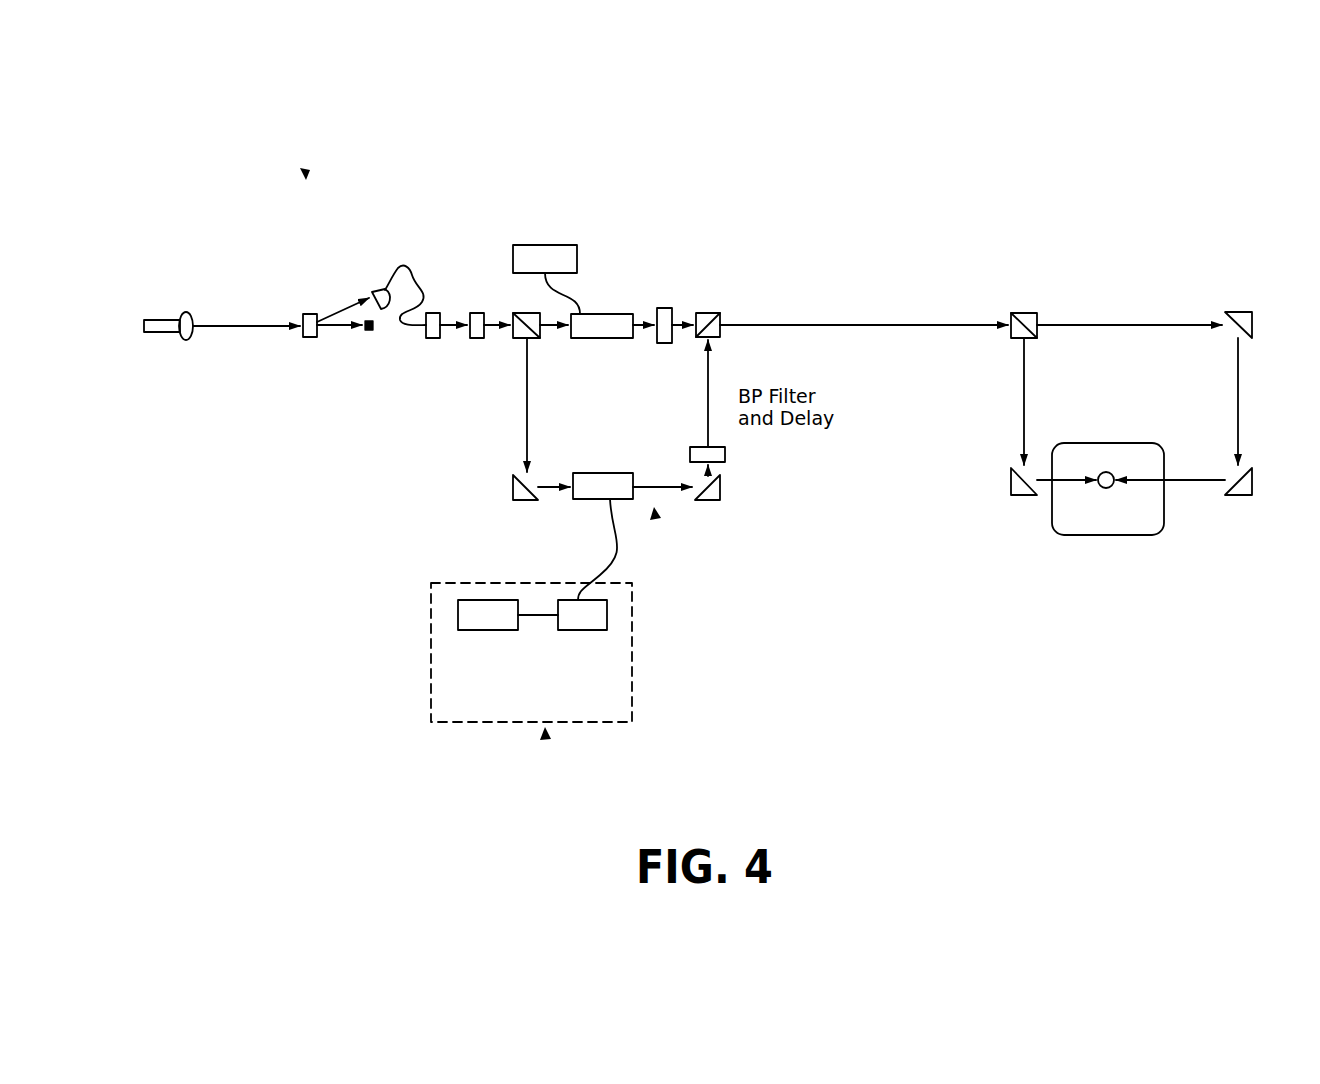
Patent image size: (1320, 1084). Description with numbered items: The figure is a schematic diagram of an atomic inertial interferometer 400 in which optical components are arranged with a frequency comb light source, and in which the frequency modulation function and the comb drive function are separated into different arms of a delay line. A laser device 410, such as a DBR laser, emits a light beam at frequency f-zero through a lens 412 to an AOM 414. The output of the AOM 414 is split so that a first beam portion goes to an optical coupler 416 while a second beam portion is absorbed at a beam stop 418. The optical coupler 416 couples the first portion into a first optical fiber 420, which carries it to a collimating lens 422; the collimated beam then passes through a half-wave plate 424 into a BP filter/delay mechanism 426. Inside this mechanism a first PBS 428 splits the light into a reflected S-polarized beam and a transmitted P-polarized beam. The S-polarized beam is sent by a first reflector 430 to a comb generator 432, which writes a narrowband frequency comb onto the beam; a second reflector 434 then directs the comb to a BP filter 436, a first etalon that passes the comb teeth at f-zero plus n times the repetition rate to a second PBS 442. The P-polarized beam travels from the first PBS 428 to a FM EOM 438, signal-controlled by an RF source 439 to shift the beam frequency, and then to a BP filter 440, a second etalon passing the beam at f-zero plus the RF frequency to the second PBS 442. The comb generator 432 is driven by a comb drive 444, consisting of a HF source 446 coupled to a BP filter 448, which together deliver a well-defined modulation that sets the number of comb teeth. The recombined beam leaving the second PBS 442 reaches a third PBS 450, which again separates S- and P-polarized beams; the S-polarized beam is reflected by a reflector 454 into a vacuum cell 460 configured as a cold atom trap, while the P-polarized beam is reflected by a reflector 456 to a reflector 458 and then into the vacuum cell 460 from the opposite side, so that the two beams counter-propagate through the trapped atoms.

The atomic inertial interferometer 400 is at (305, 176).
The laser device 410 is at (173, 318).
The lens 412 is at (186, 342).
The AOM 414 is at (312, 313).
The optical coupler 416 is at (374, 291).
The beam stop 418 is at (368, 330).
The first optical fiber 420 is at (410, 273).
The collimating lens 422 is at (431, 312).
The half-wave plate 424 is at (475, 339).
The BP filter/delay mechanism 426 is at (655, 512).
The first PBS 428 is at (514, 338).
The first reflector 430 is at (514, 478).
The comb generator 432 is at (590, 499).
The second reflector 434 is at (722, 486).
The BP filter 436 is at (692, 449).
The FM EOM 438 is at (620, 338).
The RF source 439 is at (532, 245).
The BP filter 440 is at (662, 308).
The second PBS 442 is at (706, 313).
The comb drive 444 is at (546, 732).
The HF source 446 is at (508, 630).
The BP filter 448 is at (590, 630).
The third PBS 450 is at (1022, 312).
The reflector 454 is at (1011, 478).
The reflector 456 is at (1233, 311).
The reflector 458 is at (1252, 478).
The vacuum cell 460 is at (1108, 535).